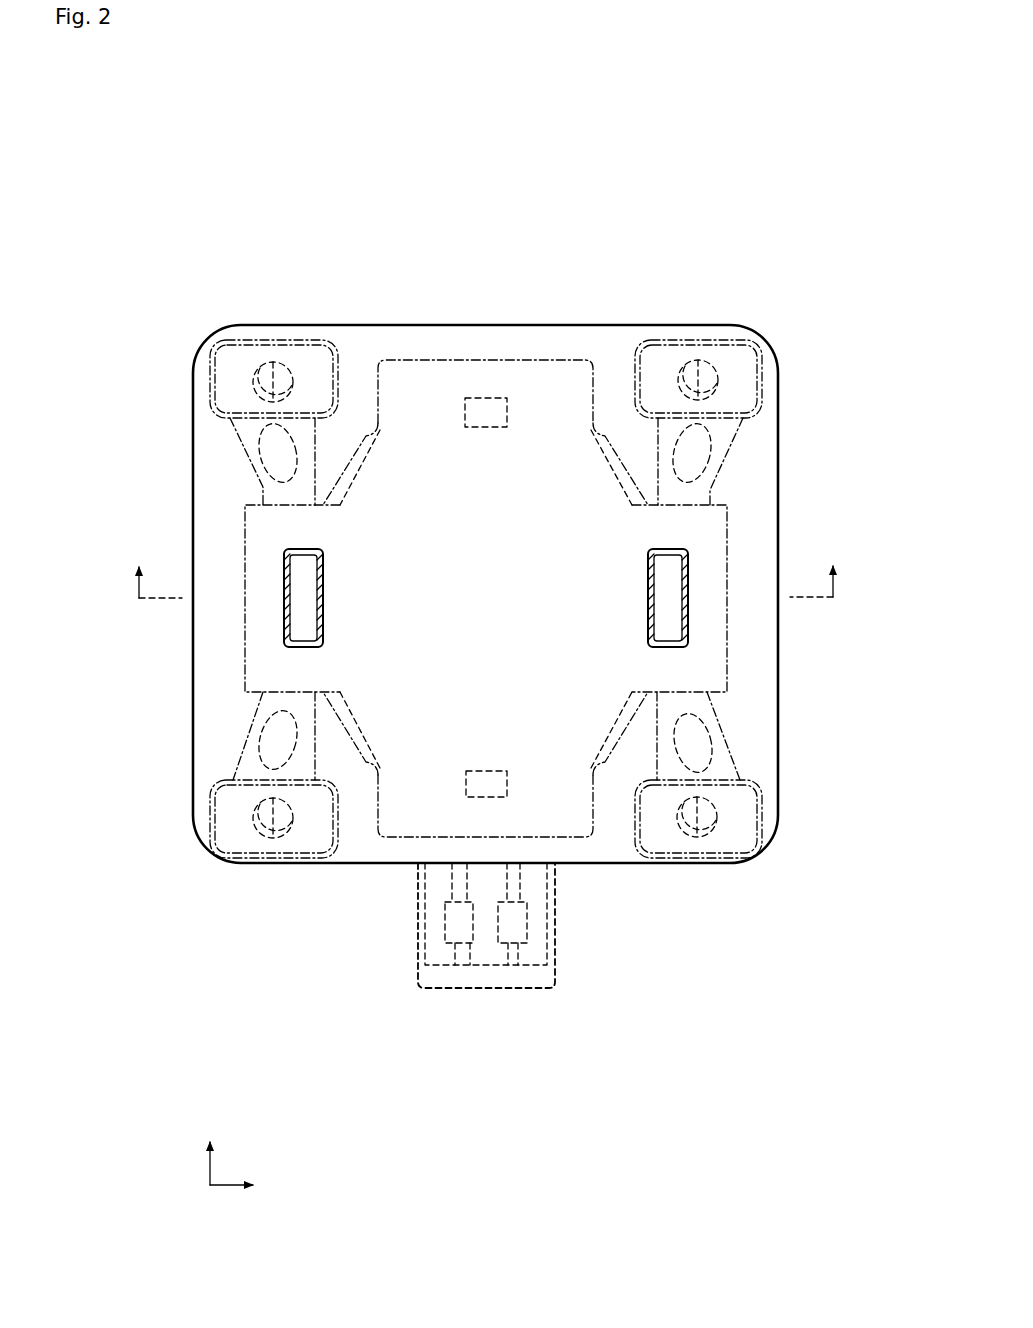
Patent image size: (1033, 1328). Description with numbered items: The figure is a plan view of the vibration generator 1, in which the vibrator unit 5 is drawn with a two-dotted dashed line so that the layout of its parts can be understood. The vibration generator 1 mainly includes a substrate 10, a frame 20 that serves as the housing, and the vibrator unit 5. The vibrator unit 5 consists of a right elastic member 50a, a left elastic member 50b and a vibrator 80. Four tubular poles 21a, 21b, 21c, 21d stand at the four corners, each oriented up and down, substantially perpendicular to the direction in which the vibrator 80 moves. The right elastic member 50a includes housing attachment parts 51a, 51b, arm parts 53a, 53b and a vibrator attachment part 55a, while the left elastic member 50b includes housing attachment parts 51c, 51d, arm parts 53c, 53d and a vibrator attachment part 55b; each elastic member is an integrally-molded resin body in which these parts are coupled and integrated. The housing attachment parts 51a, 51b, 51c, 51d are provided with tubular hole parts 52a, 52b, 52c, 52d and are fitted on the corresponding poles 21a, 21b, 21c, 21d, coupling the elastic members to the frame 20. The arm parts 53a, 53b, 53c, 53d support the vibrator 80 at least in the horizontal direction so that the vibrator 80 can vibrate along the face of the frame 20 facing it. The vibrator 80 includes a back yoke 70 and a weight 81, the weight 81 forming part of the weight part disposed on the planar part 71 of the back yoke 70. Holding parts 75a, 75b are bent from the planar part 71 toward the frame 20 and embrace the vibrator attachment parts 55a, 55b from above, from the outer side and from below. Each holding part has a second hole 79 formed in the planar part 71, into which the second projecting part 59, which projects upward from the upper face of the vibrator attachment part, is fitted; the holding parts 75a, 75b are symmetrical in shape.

The vibration generator 1 is at (216, 133).
The vibrator unit 5 is at (487, 348).
The substrate 10 is at (453, 898).
The frame 20 is at (365, 330).
The pole 21a is at (722, 365).
The pole 21b is at (715, 855).
The pole 21c is at (262, 840).
The pole 21d is at (242, 365).
The right elastic member 50a is at (753, 465).
The left elastic member 50b is at (217, 461).
The housing attachment part 51a is at (718, 292).
The housing attachment part 51b is at (723, 914).
The housing attachment part 51c is at (255, 914).
The housing attachment part 51d is at (254, 298).
The hole part 52a is at (688, 372).
The hole part 52b is at (697, 860).
The hole part 52c is at (282, 855).
The hole part 52d is at (270, 362).
The arm part 53a is at (712, 438).
The arm part 53b is at (712, 758).
The arm part 53c is at (265, 760).
The arm part 53d is at (262, 447).
The vibrator attachment part 55a is at (673, 622).
The vibrator attachment part 55b is at (302, 618).
The second projecting part 59 is at (487, 606).
The back yoke 70 is at (489, 690).
The planar part 71 is at (482, 871).
The holding part 75a is at (728, 545).
The holding part 75b is at (245, 540).
The second hole 79 is at (290, 648).
The vibrator 80 is at (422, 898).
The weight 81 is at (318, 695).